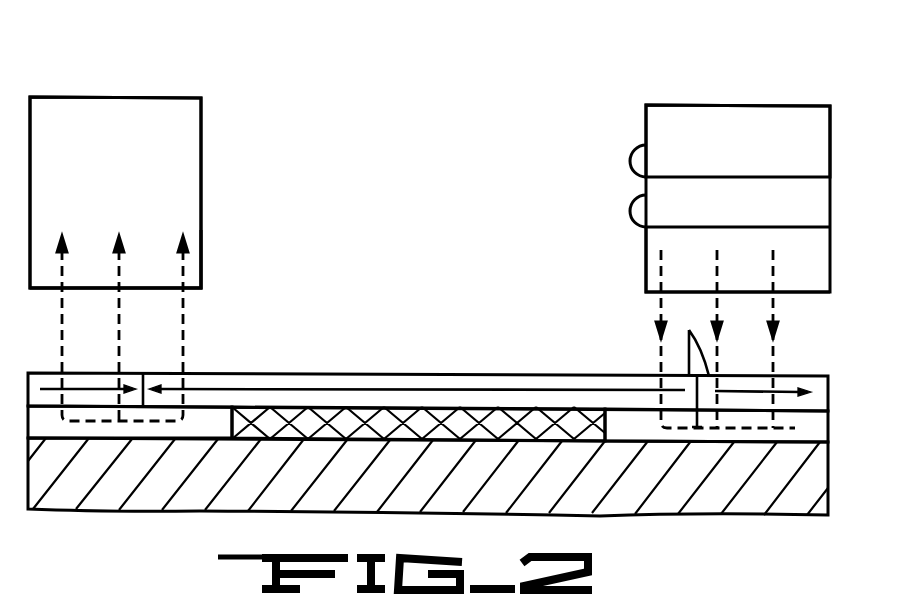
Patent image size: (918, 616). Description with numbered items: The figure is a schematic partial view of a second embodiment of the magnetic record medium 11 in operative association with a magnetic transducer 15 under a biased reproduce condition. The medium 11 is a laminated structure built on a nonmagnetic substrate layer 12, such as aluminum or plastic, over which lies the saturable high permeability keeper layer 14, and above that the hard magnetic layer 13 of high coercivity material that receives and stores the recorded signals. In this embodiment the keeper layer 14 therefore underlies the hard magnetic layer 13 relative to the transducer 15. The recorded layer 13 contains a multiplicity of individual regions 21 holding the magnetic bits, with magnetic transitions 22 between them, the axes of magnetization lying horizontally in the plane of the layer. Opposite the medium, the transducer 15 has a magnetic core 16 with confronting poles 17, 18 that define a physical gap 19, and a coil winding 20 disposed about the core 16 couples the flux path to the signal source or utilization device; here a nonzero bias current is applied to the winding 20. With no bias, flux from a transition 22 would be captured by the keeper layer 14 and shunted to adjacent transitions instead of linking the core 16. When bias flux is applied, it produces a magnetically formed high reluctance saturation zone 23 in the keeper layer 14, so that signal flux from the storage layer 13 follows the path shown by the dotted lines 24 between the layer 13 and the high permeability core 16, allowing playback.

The magnetic record medium 11 is at (395, 373).
The substrate layer 12 is at (130, 510).
The hard magnetic layer 13 is at (476, 375).
The keeper layer 14 is at (207, 422).
The magnetic transducer 15 is at (172, 76).
The magnetic core 16 is at (135, 170).
The pole 17 is at (650, 298).
The pole 18 is at (192, 290).
The physical gap 19 is at (417, 192).
The coil winding 20 is at (630, 158).
The individual regions 21 is at (696, 360).
The magnetic transition 22 is at (144, 373).
The high reluctance saturation zone 23 is at (297, 418).
The dotted lines 24 is at (183, 322).